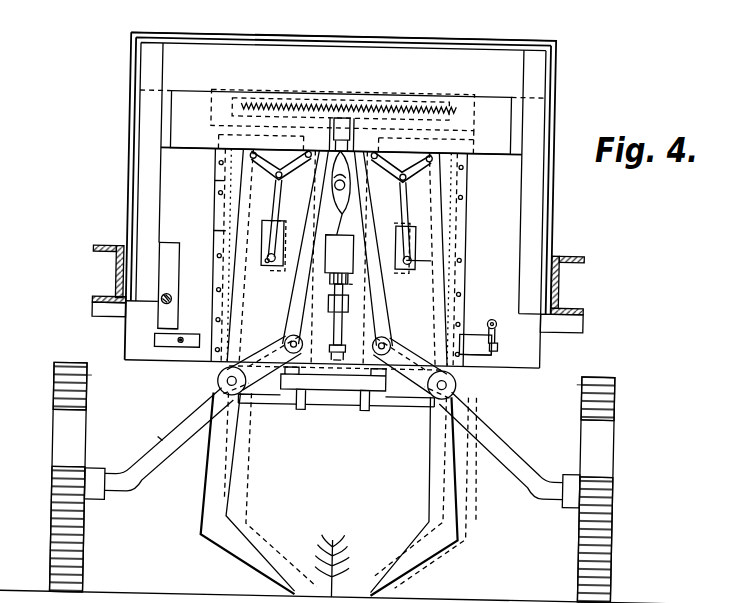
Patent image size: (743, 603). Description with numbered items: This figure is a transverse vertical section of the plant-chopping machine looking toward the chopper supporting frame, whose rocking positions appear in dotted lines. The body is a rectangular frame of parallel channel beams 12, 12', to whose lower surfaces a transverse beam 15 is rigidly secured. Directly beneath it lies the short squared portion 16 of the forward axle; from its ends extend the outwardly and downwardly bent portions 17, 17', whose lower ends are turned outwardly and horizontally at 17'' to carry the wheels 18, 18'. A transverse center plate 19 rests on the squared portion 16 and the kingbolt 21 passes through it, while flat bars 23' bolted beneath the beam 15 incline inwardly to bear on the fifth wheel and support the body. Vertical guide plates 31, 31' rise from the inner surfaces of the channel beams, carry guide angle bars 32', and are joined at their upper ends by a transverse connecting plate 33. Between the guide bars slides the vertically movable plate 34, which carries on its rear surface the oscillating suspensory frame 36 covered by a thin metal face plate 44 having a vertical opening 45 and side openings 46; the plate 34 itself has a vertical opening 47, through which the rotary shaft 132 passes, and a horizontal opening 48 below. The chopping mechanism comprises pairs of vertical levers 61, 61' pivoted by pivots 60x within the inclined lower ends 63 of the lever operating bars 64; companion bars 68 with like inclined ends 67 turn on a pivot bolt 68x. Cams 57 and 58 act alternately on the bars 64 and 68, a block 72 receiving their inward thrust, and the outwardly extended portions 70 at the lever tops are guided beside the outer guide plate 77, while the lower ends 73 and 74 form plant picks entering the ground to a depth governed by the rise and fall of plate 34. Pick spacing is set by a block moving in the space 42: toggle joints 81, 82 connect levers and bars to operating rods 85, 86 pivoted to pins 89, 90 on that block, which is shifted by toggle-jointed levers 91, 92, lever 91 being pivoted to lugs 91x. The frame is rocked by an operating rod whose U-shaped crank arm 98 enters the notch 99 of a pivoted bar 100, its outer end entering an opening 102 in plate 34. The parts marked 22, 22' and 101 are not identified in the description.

The channel beam 12 is at (576, 285).
The channel beam 12' is at (95, 273).
The transverse beam 15 is at (114, 318).
The squared portion of forward axle 16 is at (280, 404).
The bent portion of axle 17 is at (150, 467).
The bent portion of axle 17' is at (289, 496).
The horizontal end portion of axle 17'' is at (558, 504).
The wheel 18 is at (611, 490).
The wheel 18' is at (51, 477).
The transverse center plate 19 is at (355, 395).
The kingbolt 21 is at (320, 408).
The inclined arm 22 is at (500, 445).
The inclined arm 22' is at (169, 439).
The flat bar 23' is at (334, 373).
The vertical guide plate 31 is at (356, 205).
The vertical guide plate 31' is at (316, 205).
The vertical guide angle bar 32' is at (338, 200).
The transverse connecting plate 33 is at (415, 36).
The vertically movable plate 34 is at (339, 257).
The oscillating suspensory frame 36 is at (216, 183).
The wide space 42 is at (298, 298).
The thin metal face plate 44 is at (221, 233).
The vertical opening 45 is at (339, 260).
The vertical opening 46 is at (276, 222).
The vertical opening 47 is at (165, 296).
The horizontal opening 48 is at (165, 338).
The cam 57 is at (338, 236).
The cam 58 is at (344, 166).
The pivot 60x is at (222, 383).
The vertical lever 61 is at (334, 257).
The vertical lever 61' is at (458, 385).
The inclined lower end 63 is at (265, 353).
The lever operating bar 64 is at (306, 247).
The inclined lower end 67 is at (410, 360).
The lever operating bar 68 is at (382, 248).
The pivot bolt 68x is at (388, 340).
The outwardly extended portion 70 is at (272, 574).
The block 72 is at (346, 130).
The plant pick 73 is at (430, 560).
The plant pick 74 is at (248, 566).
The outer guide plate 77 is at (200, 95).
The toggle joint 81 is at (432, 183).
The toggle joint 82 is at (245, 163).
The operating rod 85 is at (420, 237).
The operating rod 86 is at (268, 208).
The pin 89 is at (430, 259).
The pin 90 is at (262, 262).
The toggle jointed lever 91 is at (337, 314).
The lugs 91x is at (350, 284).
The toggle jointed lever 92 is at (356, 338).
The U shaped crank arm 98 is at (497, 336).
The notch 99 is at (495, 343).
The pivoted bar 100 is at (466, 334).
The latch base 101 is at (478, 355).
The opening 102 is at (491, 316).
The rotary shaft 132 is at (183, 345).